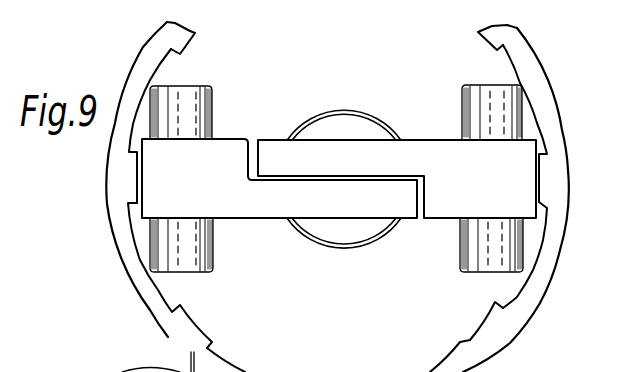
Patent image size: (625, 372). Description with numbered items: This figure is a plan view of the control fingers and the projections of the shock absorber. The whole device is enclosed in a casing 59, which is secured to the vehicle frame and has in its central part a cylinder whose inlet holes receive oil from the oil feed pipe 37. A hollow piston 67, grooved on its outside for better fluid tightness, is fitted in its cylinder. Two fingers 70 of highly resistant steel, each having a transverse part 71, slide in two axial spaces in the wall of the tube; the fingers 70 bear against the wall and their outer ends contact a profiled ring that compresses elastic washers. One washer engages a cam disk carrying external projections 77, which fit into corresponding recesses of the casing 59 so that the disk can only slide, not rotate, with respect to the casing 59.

The casing 59 is at (492, 338).
The hollow piston 67 is at (313, 132).
The fingers 70 is at (403, 155).
The transverse part 71 is at (483, 102).
The external projections 77 is at (418, 371).
The oil feed pipe 37 is at (145, 360).